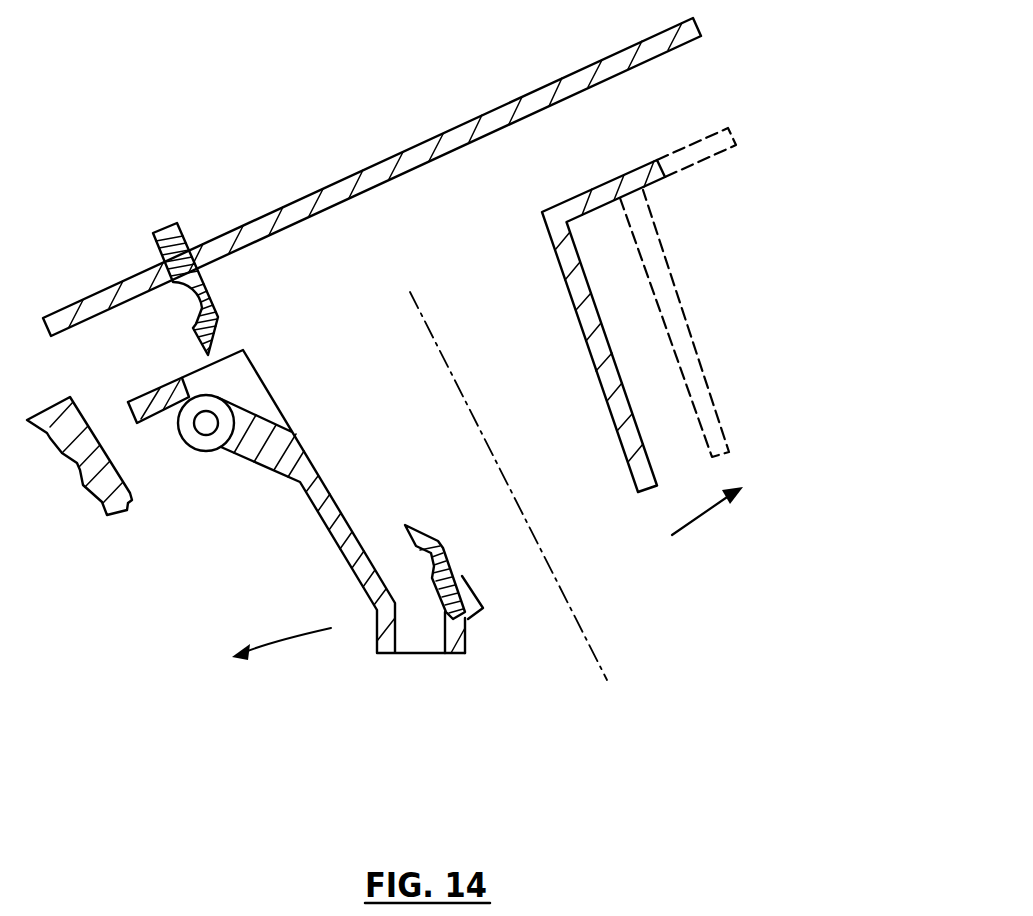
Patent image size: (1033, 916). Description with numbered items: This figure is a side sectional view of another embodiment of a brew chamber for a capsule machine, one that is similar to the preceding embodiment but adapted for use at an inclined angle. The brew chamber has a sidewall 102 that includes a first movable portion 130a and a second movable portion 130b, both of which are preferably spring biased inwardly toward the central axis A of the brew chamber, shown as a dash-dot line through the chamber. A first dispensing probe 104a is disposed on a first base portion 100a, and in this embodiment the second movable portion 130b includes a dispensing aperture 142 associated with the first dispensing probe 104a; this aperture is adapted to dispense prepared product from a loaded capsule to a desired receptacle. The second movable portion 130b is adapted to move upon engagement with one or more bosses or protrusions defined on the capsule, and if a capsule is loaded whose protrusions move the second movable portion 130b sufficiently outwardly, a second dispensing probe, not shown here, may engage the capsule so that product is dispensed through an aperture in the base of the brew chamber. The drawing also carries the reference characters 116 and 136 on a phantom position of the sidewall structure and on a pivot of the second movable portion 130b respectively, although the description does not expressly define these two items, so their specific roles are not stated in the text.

The sidewall 102 is at (633, 310).
The door in open position (phantom) 116 is at (750, 360).
The first movable portion 130a is at (549, 298).
The second movable portion 130b is at (319, 478).
The pivot pin 136 is at (206, 421).
The first dispensing probe 104a is at (440, 547).
The first base portion 100a is at (473, 618).
The dispensing aperture 142 is at (422, 632).
The central axis A is at (585, 618).